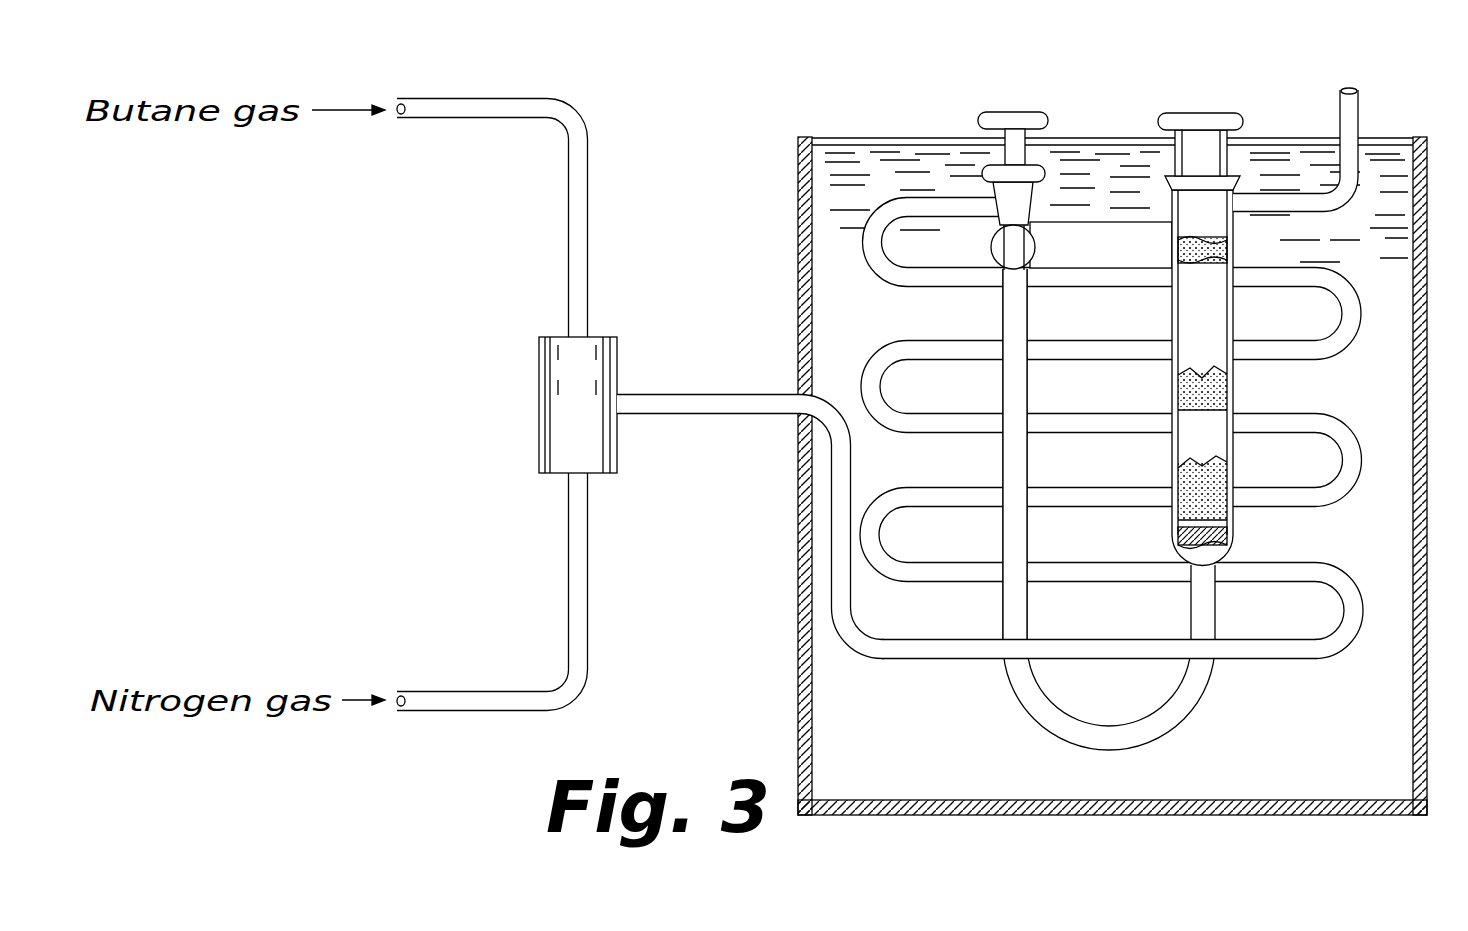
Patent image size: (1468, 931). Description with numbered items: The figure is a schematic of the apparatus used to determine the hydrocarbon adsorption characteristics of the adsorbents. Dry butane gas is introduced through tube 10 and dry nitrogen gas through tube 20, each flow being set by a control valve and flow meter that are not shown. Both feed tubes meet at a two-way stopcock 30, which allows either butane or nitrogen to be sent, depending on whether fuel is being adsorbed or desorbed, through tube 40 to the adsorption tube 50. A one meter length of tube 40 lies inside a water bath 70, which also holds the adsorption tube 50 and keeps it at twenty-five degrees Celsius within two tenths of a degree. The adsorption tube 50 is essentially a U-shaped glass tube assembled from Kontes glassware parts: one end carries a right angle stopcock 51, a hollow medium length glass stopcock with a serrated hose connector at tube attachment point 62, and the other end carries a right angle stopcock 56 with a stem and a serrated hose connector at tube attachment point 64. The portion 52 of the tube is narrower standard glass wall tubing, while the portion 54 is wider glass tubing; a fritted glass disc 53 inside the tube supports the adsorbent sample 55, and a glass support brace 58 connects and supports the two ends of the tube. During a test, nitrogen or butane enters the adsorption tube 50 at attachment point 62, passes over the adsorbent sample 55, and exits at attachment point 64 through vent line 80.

The tube 10 is at (466, 100).
The tube 20 is at (448, 706).
The two-way stopcock 30 is at (560, 367).
The tube 40 is at (696, 396).
The adsorption tube 50 is at (1047, 732).
The right angle stopcock 51 is at (996, 110).
The portion of the adsorption tube 52 is at (1003, 455).
The fritted glass disc 53 is at (1180, 538).
The portion of the adsorption tube 54 is at (1235, 318).
The adsorbent sample 55 is at (1235, 380).
The right angle stopcock 56 is at (1180, 113).
The glass support brace 58 is at (1062, 234).
The tube attachment point 62 is at (986, 210).
The tube attachment point 64 is at (1222, 220).
The water bath 70 is at (1356, 806).
The vent line 80 is at (1358, 104).